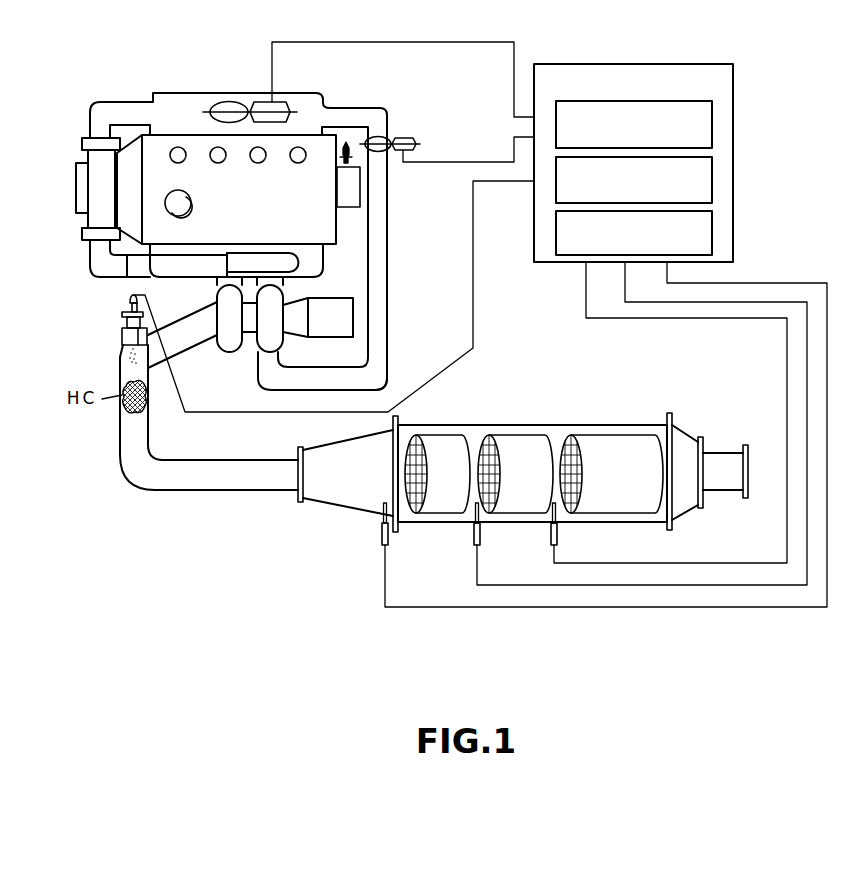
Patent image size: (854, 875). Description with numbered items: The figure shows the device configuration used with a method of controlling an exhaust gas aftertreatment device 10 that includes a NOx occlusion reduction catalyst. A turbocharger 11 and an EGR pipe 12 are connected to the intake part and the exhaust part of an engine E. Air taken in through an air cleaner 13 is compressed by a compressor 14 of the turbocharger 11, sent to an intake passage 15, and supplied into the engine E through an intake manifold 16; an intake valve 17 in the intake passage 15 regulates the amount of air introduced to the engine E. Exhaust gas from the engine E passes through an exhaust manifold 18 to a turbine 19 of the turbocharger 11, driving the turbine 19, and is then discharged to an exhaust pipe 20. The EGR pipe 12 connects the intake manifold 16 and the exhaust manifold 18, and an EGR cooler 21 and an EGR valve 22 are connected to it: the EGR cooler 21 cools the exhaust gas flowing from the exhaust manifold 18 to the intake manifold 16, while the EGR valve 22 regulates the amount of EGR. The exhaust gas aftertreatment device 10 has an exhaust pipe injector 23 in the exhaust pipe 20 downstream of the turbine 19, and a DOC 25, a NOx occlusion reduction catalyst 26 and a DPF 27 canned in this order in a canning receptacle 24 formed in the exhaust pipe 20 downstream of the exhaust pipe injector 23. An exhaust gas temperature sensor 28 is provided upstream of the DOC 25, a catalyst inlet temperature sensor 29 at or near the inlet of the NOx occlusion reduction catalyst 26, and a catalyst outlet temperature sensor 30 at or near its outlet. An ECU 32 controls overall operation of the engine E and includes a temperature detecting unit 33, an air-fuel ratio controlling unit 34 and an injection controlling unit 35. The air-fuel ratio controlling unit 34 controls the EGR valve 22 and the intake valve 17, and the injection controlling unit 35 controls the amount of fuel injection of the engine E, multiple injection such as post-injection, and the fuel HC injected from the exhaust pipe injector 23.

The engine E is at (162, 138).
The exhaust gas aftertreatment device 10 is at (525, 437).
The turbocharger 11 is at (247, 357).
The EGR pipe 12 is at (88, 257).
The air cleaner 13 is at (353, 317).
The compressor 14 is at (283, 342).
The intake passage 15 is at (392, 347).
The intake manifold 16 is at (298, 93).
The intake valve 17 is at (385, 137).
The exhaust manifold 18 is at (327, 258).
The turbine 19 is at (208, 353).
The exhaust pipe 20 is at (186, 492).
The EGR cooler 21 is at (95, 185).
The EGR valve 22 is at (229, 100).
The exhaust pipe injector 23 is at (120, 322).
The canning receptacle 24 is at (640, 425).
The DOC 25 is at (448, 437).
The NOx occlusion reduction catalyst 26 is at (514, 437).
The DPF 27 is at (597, 435).
The exhaust gas temperature sensor 28 is at (380, 538).
The catalyst inlet temperature sensor 29 is at (472, 538).
The catalyst outlet temperature sensor 30 is at (560, 539).
The ECU 32 is at (659, 137).
The temperature detecting unit 33 is at (715, 235).
The air-fuel ratio controlling unit 34 is at (715, 124).
The injection controlling unit 35 is at (715, 191).